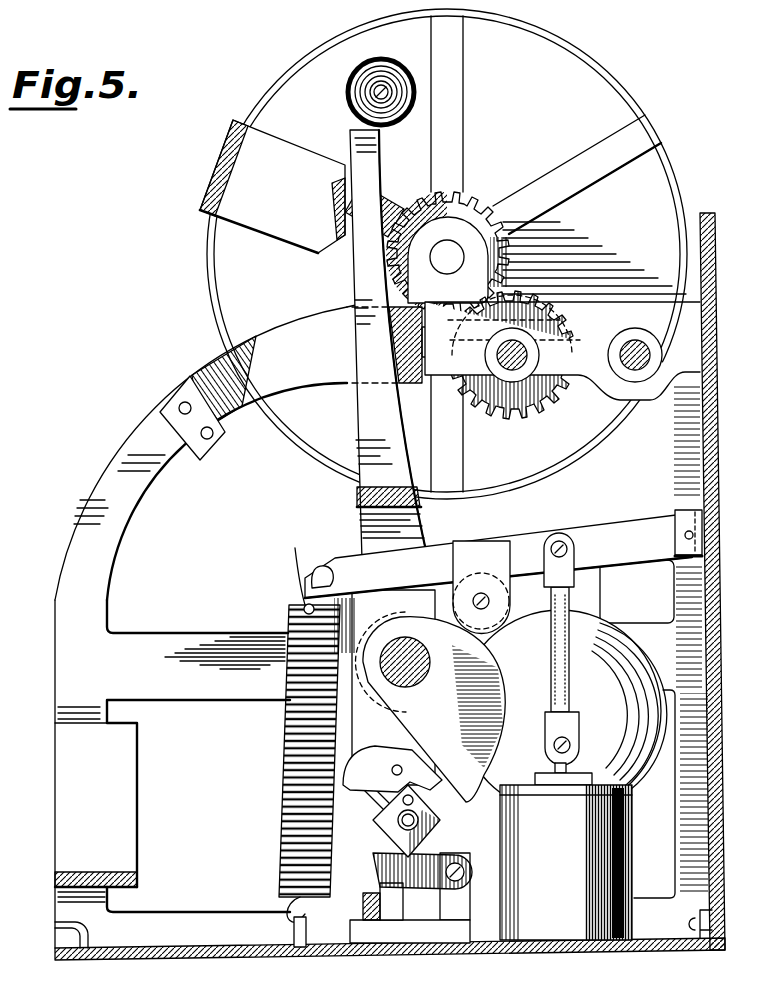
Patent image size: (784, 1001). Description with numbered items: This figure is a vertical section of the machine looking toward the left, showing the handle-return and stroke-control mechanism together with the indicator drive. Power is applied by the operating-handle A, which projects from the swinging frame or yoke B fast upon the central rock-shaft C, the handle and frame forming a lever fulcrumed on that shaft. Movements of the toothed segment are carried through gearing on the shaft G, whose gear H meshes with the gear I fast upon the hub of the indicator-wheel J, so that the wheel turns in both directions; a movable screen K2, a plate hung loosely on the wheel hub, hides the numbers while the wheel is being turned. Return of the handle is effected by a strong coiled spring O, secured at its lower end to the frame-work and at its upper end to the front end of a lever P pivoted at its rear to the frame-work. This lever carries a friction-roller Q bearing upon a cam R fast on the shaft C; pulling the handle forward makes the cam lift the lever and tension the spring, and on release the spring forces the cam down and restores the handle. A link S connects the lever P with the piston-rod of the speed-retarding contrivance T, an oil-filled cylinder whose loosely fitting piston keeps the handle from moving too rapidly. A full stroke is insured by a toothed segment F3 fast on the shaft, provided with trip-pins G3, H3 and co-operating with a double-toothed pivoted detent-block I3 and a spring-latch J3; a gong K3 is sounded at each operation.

The indicator-wheel J is at (587, 57).
The movable screen K2 is at (272, 186).
The gear I is at (473, 203).
The shaft G is at (505, 348).
The gear H is at (512, 367).
The operating-handle A is at (388, 309).
The swinging frame or yoke B is at (356, 497).
The lever P is at (524, 542).
The friction-roller Q is at (494, 628).
The toothed segment F3 is at (302, 614).
The trip-pin G3 is at (300, 613).
The central rock-shaft C is at (407, 640).
The cam R is at (430, 707).
The gong K3 is at (563, 711).
The link S is at (572, 678).
The coiled spring O is at (292, 745).
The trip-pin H3 is at (428, 782).
The double-toothed pivoted detent-block I3 is at (388, 818).
The spring-latch J3 is at (392, 850).
The speed-retarding contrivance T is at (566, 856).